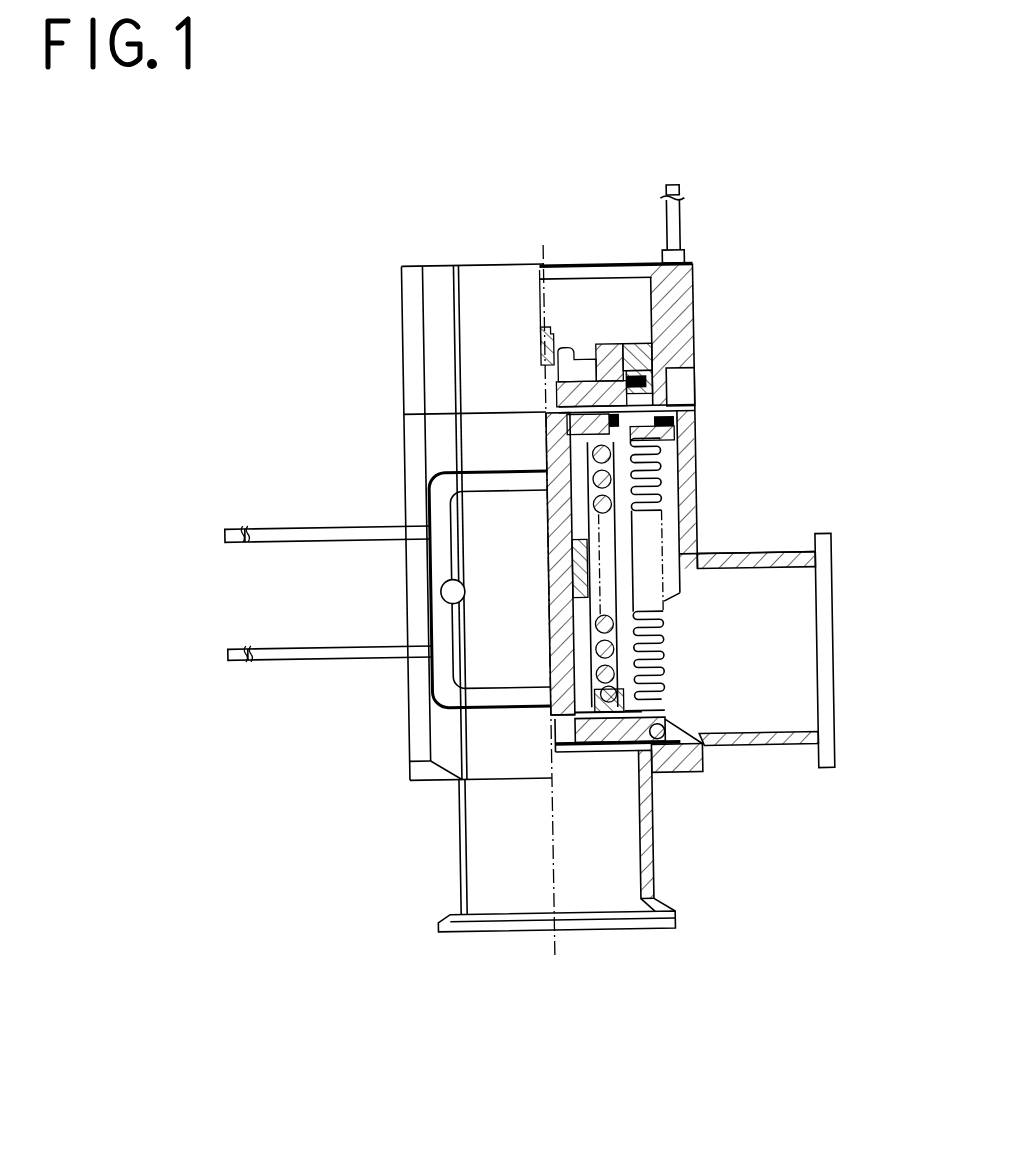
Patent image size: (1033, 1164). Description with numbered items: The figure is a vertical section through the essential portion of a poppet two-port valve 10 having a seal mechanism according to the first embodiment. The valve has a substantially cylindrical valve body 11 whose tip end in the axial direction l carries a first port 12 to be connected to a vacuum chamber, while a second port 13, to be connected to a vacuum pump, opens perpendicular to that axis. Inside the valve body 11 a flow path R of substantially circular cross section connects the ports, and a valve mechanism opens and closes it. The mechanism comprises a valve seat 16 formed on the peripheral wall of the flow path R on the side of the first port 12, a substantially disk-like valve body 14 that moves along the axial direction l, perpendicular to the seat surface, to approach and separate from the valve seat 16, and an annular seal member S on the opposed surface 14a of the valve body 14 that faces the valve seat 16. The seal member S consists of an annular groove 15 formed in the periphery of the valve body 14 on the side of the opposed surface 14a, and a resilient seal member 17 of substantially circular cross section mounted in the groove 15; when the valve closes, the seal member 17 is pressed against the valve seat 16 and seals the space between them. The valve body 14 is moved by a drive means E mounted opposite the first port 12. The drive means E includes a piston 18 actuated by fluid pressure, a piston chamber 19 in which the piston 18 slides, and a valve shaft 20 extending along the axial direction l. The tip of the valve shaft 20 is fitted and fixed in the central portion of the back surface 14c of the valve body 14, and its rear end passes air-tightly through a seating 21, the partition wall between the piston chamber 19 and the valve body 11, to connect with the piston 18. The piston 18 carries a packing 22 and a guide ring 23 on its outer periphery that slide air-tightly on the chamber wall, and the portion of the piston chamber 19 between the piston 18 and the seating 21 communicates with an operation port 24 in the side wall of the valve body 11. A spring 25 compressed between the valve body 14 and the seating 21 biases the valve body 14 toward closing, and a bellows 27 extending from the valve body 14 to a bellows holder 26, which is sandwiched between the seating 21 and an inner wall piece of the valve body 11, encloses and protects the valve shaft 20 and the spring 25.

The poppet two-port valve 10 is at (679, 232).
The valve body 11 is at (370, 593).
The first port 12 is at (586, 945).
The second port 13 is at (849, 613).
The valve body 14 is at (670, 617).
The opposed surface 14a is at (648, 838).
The back surface 14c is at (693, 726).
The annular groove 15 is at (676, 774).
The valve seat 16 is at (642, 748).
The seal member 17 is at (663, 715).
The piston 18 is at (613, 345).
The piston chamber 19 is at (658, 414).
The valve shaft 20 is at (561, 536).
The seating 21 is at (661, 426).
The packing 22 is at (674, 389).
The guide ring 23 is at (682, 356).
The operation port 24 is at (687, 393).
The spring 25 is at (614, 463).
The bellows holder 26 is at (651, 429).
The bellows 27 is at (661, 498).
The drive means E is at (484, 357).
The seal member S is at (668, 731).
The flow path R is at (724, 718).
The axial direction l is at (545, 581).